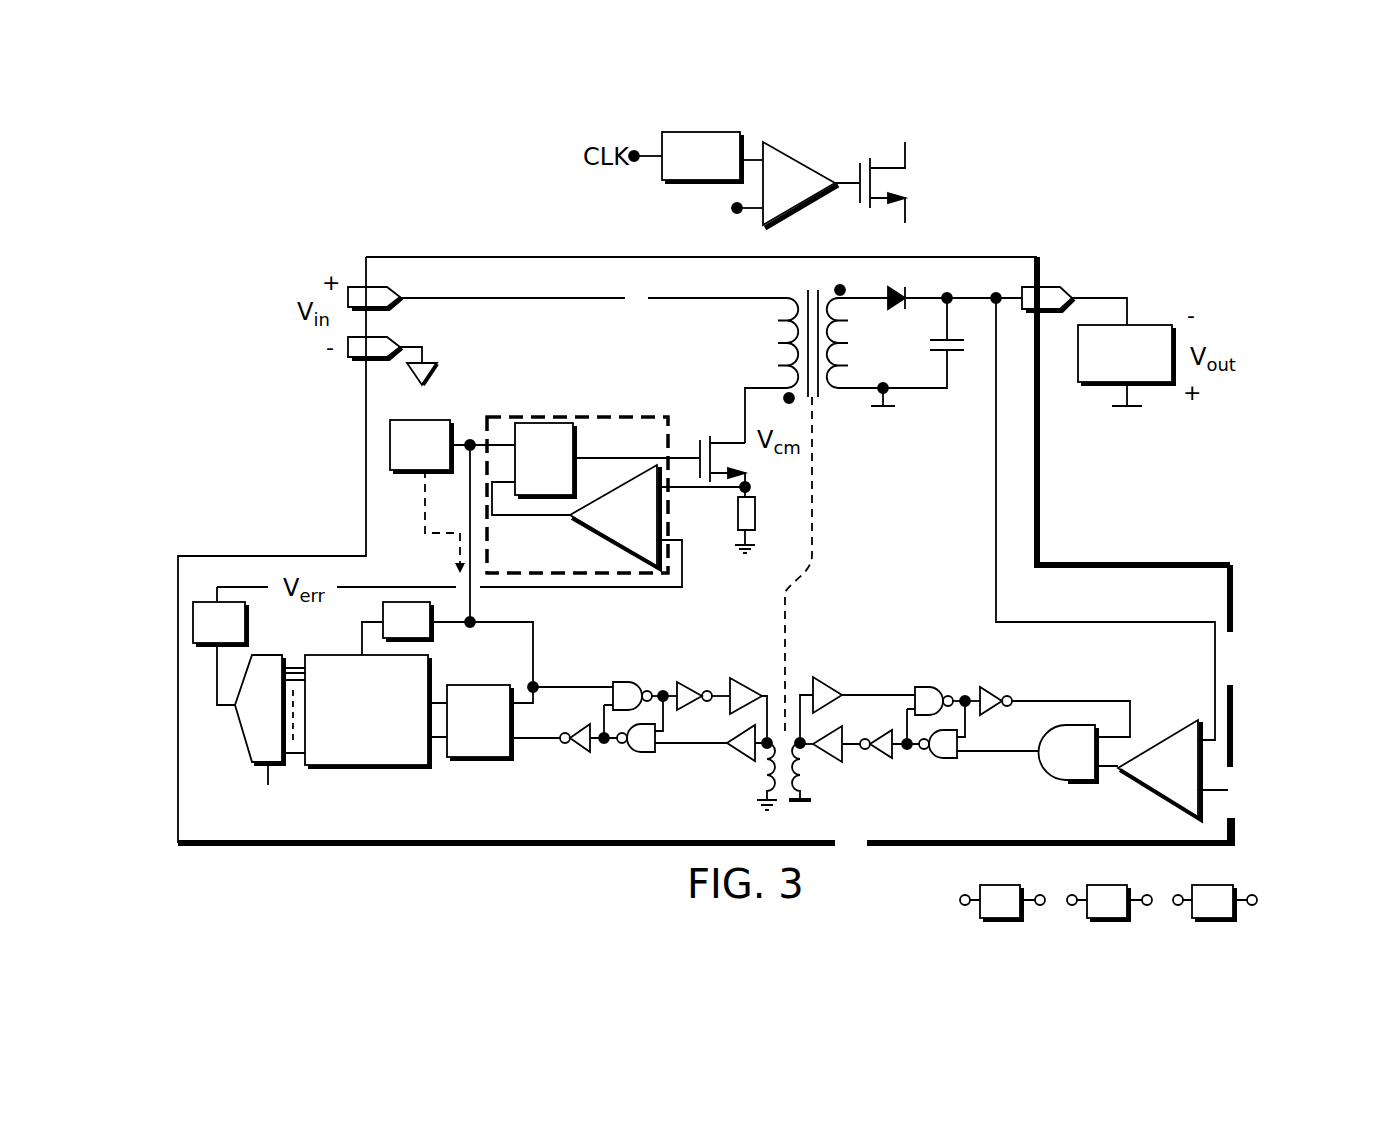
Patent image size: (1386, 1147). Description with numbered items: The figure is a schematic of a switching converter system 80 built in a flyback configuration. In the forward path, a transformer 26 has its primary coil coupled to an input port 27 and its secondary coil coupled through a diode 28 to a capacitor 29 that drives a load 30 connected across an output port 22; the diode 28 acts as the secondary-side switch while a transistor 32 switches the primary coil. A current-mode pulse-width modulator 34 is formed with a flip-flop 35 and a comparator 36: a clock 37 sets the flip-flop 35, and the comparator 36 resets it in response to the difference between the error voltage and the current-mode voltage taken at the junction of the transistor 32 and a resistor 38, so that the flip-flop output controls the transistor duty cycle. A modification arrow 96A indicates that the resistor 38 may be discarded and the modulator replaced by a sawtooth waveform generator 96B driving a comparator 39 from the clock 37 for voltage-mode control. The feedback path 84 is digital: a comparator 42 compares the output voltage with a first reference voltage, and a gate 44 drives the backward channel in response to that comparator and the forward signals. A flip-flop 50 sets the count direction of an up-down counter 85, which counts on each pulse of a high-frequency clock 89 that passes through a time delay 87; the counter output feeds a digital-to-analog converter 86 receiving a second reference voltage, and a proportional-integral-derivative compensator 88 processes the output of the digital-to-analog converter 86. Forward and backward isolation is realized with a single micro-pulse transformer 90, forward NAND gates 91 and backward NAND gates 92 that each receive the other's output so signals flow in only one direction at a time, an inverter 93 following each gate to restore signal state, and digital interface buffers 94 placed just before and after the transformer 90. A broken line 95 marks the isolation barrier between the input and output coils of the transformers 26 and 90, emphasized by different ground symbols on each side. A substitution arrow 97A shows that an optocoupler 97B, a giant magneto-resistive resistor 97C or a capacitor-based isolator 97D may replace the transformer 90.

The output port 22 is at (1055, 283).
The transformer 26 is at (846, 354).
The input port 27 is at (353, 285).
The diode 28 is at (935, 287).
The capacitor 29 is at (958, 321).
The load 30 is at (1150, 325).
The transistor 32 is at (739, 312).
The current-mode pulse-width modulator 34 is at (562, 412).
The flip-flop 35 is at (565, 460).
The comparator 36 is at (481, 526).
The clock 37 is at (425, 420).
The resistor 38 is at (752, 487).
The comparator 39 is at (771, 187).
The comparator 42 is at (1148, 559).
The gate 44 is at (1084, 753).
The flip-flop 50 is at (479, 707).
The switching converter system 80 is at (493, 255).
The feedback path 84 is at (1232, 665).
The digital up-down counter 85 is at (385, 767).
The digital-to-analog converter 86 is at (270, 736).
The time delay 87 is at (444, 649).
The proportional-integral-derivative compensator 88 is at (239, 646).
The clock 89 is at (435, 521).
The micro-pulse transformer 90 is at (755, 785).
The NAND gates 91 is at (620, 678).
The NAND gates 92 is at (640, 758).
The inverter 93 is at (690, 682).
The digital interface buffers 94 is at (765, 720).
The broken line 95 is at (808, 566).
The modification arrow 96A is at (672, 218).
The sawtooth waveform generator 96B is at (690, 132).
The substitution arrow 97A is at (822, 817).
The optocoupler 97B is at (1002, 889).
The giant magneto-resistive resistor 97C is at (1109, 889).
The capacitor-based isolator 97D is at (1215, 889).